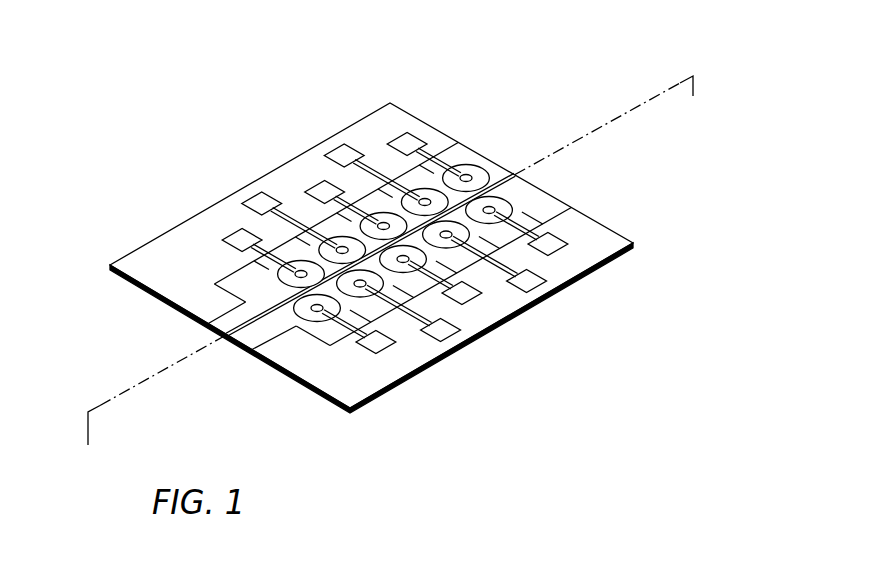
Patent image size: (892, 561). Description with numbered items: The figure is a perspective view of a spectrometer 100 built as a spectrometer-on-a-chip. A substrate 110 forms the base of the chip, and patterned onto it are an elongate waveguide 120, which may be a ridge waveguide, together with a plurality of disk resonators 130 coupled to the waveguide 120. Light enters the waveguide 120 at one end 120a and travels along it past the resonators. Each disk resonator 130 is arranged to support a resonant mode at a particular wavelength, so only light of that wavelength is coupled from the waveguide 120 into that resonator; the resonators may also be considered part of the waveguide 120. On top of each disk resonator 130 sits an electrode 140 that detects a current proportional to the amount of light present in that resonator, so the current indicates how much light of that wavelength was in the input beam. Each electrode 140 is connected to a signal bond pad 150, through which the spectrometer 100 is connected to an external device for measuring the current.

The spectrometer 100 is at (414, 253).
The substrate 110 is at (287, 382).
The elongate waveguide 120 is at (466, 207).
The end of the waveguide 120a is at (220, 328).
The disk resonator 130 is at (475, 173).
The electrode 140 is at (461, 175).
The signal bond pad 150 is at (447, 176).